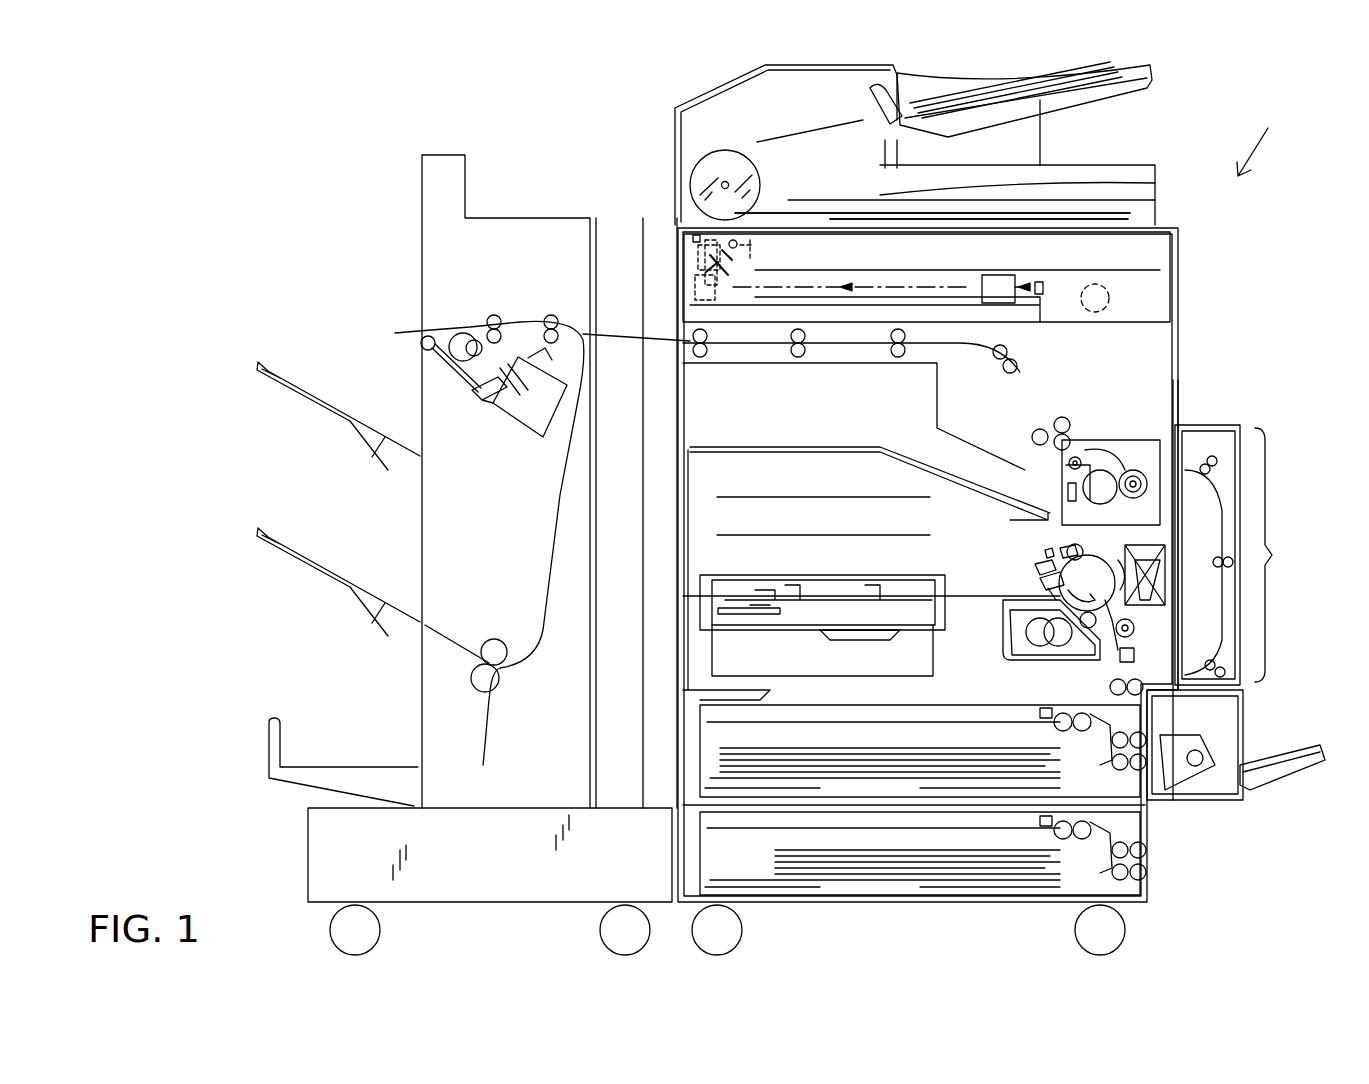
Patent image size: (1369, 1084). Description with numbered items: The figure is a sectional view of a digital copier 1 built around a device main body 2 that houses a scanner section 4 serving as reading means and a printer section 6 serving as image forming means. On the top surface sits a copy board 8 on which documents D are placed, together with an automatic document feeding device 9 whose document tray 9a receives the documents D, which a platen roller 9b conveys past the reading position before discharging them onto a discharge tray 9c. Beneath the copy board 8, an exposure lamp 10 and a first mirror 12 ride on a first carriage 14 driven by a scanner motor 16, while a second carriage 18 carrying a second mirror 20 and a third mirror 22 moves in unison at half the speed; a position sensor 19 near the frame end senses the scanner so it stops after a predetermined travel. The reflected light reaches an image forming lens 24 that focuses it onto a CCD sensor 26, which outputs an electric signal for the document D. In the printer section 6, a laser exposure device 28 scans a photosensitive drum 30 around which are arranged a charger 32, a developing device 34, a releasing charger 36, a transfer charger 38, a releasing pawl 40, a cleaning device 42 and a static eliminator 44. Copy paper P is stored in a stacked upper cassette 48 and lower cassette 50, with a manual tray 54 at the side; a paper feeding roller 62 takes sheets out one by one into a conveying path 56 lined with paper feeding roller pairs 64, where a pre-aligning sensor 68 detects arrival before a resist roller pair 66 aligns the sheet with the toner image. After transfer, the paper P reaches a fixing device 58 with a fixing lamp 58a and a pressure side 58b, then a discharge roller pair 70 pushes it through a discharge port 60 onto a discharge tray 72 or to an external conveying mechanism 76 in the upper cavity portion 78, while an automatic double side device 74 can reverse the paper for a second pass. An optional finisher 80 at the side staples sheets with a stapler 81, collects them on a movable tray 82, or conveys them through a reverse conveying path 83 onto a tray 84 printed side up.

The digital copier 1 is at (1259, 139).
The device main body 2 is at (1172, 342).
The scanner section 4 is at (1170, 276).
The printer section 6 is at (1250, 720).
The copy board 8 is at (1115, 218).
The automatic document feeding device 9 is at (728, 114).
The document tray 9a is at (1130, 98).
The platen roller 9b is at (759, 175).
The discharge tray 9c is at (1076, 165).
The exposure lamp 10 is at (737, 242).
The first mirror 12 is at (725, 292).
The first carriage 14 is at (755, 247).
The scanner motor 16 is at (1110, 296).
The second carriage 18 is at (705, 270).
The position sensor 19 is at (690, 235).
The second mirror 20 is at (700, 250).
The third mirror 22 is at (700, 288).
The image forming lens 24 is at (985, 275).
The CCD sensor 26 is at (1043, 282).
The laser exposure device 28 is at (768, 582).
The photosensitive drum 30 is at (1110, 580).
The charger 32 is at (1042, 580).
The developing device 34 is at (1010, 638).
The releasing charger 36 is at (1140, 625).
The transfer charger 38 is at (1150, 600).
The releasing pawl 40 is at (1125, 560).
The cleaning device 42 is at (1058, 548).
The static eliminator 44 is at (1038, 564).
The upper cassette 48 is at (712, 745).
The lower cassette 50 is at (712, 855).
The manual tray 54 is at (1278, 790).
The conveying path 56 is at (1150, 580).
The fixing device 58 is at (1098, 445).
The fixing lamp 58a is at (1140, 470).
The pressure roller 58b is at (1068, 492).
The discharge port 60 is at (1050, 425).
The paper feeding roller 62 is at (1048, 710).
The paper feeding roller pairs 64 is at (1110, 688).
The resist roller pair 66 is at (1110, 635).
The pre-aligning sensor 68 is at (1135, 655).
The discharge roller pair 70 is at (1066, 425).
The discharge tray 72 is at (880, 447).
The automatic double side device 74 is at (1241, 555).
The external conveying mechanism 76 is at (838, 358).
The upper cavity portion 78 is at (802, 400).
The finisher 80 is at (522, 232).
The stapler 81 is at (517, 429).
The tray 82 is at (335, 398).
The reverse conveying path 83 is at (558, 520).
The tray 84 is at (335, 564).
The documents D is at (1060, 70).
The copy paper P is at (1093, 440).